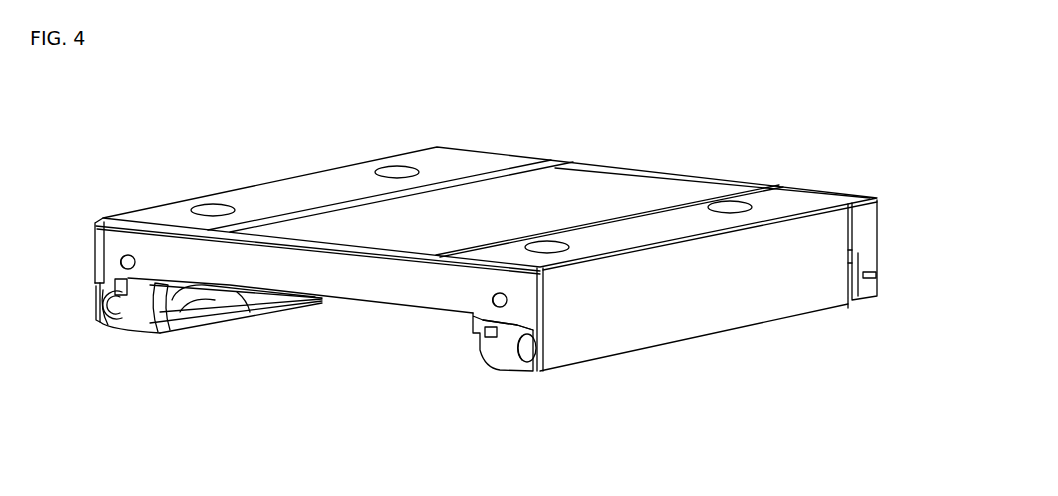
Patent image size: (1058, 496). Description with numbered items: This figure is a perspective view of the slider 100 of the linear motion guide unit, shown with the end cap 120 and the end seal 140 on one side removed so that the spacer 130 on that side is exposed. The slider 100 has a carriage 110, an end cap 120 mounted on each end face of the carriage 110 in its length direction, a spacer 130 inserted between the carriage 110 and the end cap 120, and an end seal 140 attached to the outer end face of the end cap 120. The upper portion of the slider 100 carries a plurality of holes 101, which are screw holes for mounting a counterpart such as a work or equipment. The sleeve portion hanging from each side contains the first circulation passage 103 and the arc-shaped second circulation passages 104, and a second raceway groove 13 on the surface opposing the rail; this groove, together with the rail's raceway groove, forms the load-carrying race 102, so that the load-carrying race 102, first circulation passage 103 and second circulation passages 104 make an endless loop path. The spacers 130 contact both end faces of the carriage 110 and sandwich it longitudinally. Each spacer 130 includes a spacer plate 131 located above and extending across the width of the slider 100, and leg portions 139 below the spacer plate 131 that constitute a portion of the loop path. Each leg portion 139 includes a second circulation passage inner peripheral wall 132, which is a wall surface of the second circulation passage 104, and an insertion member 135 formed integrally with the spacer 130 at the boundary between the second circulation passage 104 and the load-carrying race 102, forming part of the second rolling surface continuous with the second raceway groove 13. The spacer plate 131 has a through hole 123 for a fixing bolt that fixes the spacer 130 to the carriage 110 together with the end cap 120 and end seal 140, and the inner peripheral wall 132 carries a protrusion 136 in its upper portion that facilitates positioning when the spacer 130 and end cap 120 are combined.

The slider 100 is at (607, 117).
The holes 101 is at (397, 168).
The load-carrying race 102 is at (212, 297).
The first circulation passage 103 is at (118, 301).
The second circulation passages 104 is at (100, 322).
The carriage 110 is at (727, 307).
The end cap 120 is at (870, 233).
The through hole 123 is at (120, 262).
The spacer 130 is at (102, 232).
The spacer plate 131 is at (239, 295).
The second circulation passage inner peripheral wall 132 is at (137, 317).
The insertion member 135 is at (172, 328).
The protrusion 136 is at (500, 330).
The leg portions 139 is at (455, 325).
The end seal 140 is at (882, 284).
The second raceway groove 13 is at (200, 302).